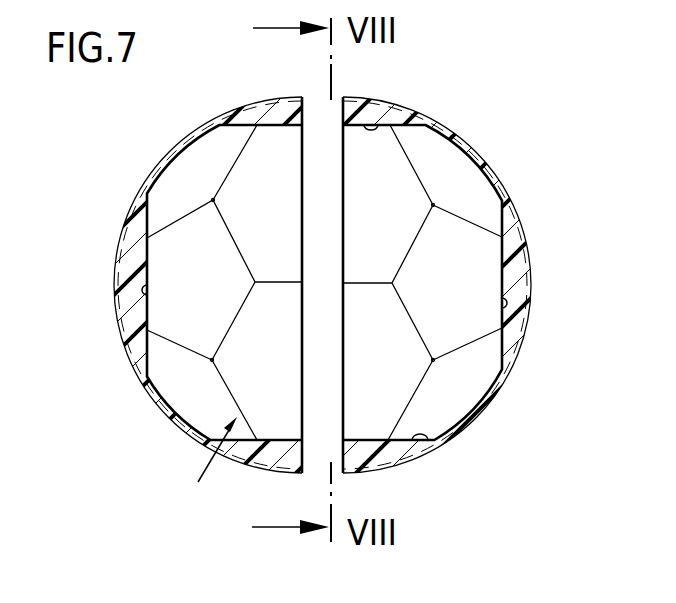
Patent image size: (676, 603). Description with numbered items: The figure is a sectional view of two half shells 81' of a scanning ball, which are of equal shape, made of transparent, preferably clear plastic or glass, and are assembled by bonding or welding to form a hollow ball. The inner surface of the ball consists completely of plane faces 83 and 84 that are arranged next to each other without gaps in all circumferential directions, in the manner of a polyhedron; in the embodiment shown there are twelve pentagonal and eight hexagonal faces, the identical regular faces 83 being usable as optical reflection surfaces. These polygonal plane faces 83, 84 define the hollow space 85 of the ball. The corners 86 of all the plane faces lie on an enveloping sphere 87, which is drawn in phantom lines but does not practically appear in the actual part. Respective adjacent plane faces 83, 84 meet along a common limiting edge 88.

The half shell 81' is at (322, 268).
The plane face 83 is at (198, 153).
The plane face 84 is at (130, 307).
The hollow space 85 is at (197, 473).
The corner 86 is at (213, 200).
The enveloping sphere 87 is at (128, 250).
The common limiting edge 88 is at (239, 156).